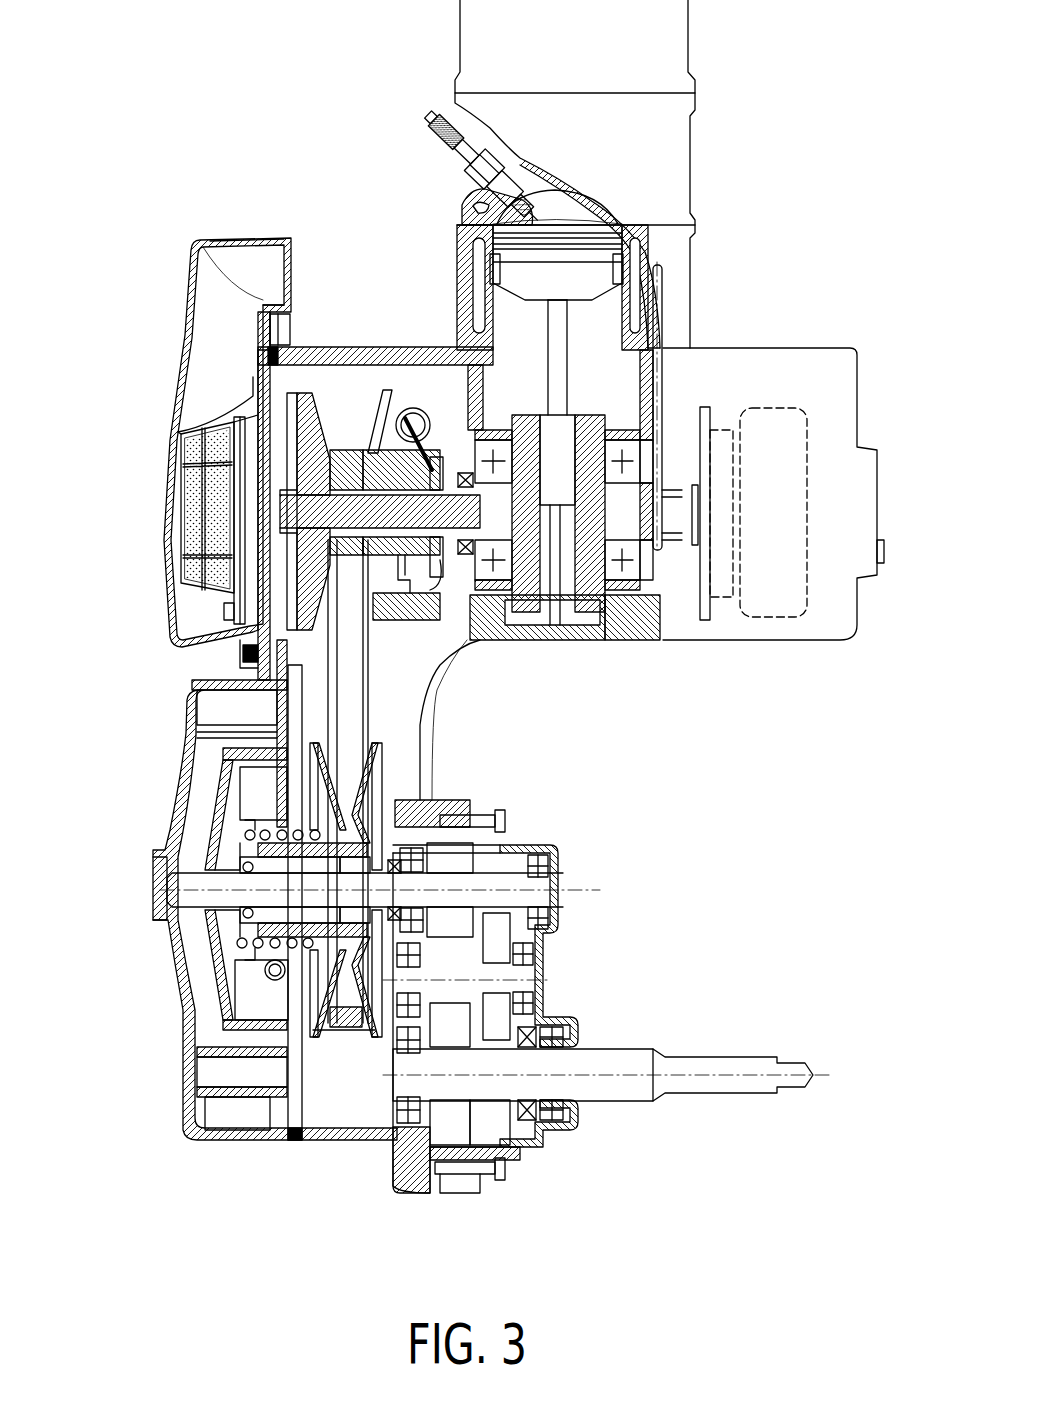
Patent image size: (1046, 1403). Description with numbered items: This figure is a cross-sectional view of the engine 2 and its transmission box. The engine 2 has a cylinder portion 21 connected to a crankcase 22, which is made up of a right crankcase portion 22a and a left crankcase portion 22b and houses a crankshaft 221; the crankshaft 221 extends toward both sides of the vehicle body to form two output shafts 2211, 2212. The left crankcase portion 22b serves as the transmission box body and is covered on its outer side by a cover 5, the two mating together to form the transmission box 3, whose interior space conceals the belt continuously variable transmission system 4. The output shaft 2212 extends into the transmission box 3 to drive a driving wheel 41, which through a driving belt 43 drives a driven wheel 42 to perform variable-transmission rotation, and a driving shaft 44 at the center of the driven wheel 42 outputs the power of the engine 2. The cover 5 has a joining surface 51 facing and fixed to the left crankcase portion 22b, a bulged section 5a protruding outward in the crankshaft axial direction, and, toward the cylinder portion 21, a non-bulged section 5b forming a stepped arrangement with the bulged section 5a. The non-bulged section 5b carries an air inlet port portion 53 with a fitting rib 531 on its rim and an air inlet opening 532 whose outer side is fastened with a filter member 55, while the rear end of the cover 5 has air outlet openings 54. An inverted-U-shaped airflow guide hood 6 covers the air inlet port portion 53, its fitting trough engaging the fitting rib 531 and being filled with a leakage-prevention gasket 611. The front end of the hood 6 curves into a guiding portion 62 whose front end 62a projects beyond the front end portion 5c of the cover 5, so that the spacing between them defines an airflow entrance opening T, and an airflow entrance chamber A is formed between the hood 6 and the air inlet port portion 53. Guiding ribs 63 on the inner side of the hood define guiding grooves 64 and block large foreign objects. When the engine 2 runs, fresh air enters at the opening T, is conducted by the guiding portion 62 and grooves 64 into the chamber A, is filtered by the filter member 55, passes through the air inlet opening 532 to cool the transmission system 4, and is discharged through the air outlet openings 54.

The engine 2 is at (556, 174).
The cylinder portion 21 is at (683, 283).
The crankcase 22 is at (680, 655).
The right crankcase portion 22a is at (625, 645).
The left crankcase portion 22b is at (500, 643).
The crankshaft 221 is at (590, 575).
The output shaft 2211 is at (710, 520).
The output shaft 2212 is at (352, 510).
The transmission box 3 is at (405, 1183).
The belt continuously variable transmission system 4 is at (210, 987).
The driving wheel 41 is at (400, 410).
The driven wheel 42 is at (380, 780).
The driving belt 43 is at (345, 1015).
The driving shaft 44 is at (500, 880).
The cover 5 is at (140, 887).
The bulged section 5a is at (185, 800).
The non-bulged section 5b is at (257, 398).
The front end portion 5c is at (258, 320).
The joining surface 51 is at (288, 1073).
The air inlet port portion 53 is at (60, 560).
The fitting rib 531 is at (236, 622).
The air inlet opening 532 is at (258, 550).
The air outlet opening 54 is at (225, 708).
The filter member 55 is at (270, 483).
The airflow guide hood 6 is at (205, 226).
The leakage-prevention gasket 611 is at (240, 648).
The guiding portion 62 is at (180, 336).
The front end 62a is at (245, 237).
The guiding rib 63 is at (197, 448).
The guiding groove 64 is at (225, 273).
The airflow entrance chamber A is at (178, 523).
The airflow entrance opening T is at (291, 270).